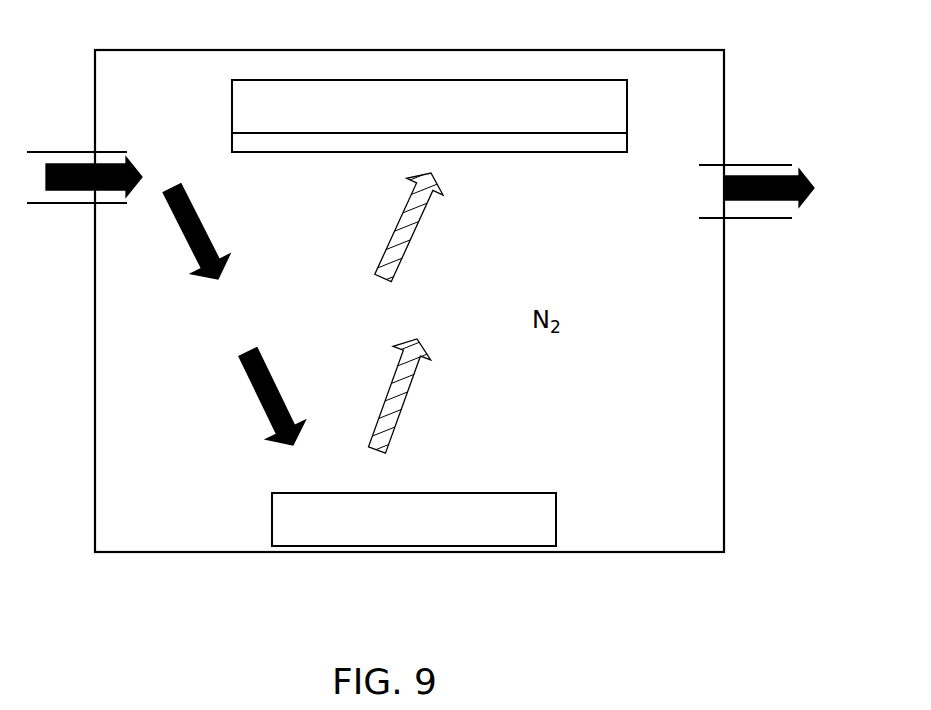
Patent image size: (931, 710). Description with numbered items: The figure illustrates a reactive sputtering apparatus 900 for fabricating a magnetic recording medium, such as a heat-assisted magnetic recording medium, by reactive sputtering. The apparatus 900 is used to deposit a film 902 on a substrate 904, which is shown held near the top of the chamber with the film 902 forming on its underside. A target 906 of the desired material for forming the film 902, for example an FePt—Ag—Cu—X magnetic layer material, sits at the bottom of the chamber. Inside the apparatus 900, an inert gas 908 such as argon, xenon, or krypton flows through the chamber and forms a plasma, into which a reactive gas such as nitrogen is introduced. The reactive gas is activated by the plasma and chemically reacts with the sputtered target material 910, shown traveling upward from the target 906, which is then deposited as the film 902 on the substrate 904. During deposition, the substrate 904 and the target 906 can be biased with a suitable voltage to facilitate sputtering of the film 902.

The reactive sputtering apparatus 900 is at (713, 50).
The film 902 is at (603, 152).
The substrate 904 is at (628, 108).
The target 906 is at (538, 495).
The inert gas 908 is at (800, 169).
The sputtered target material 910 is at (388, 279).